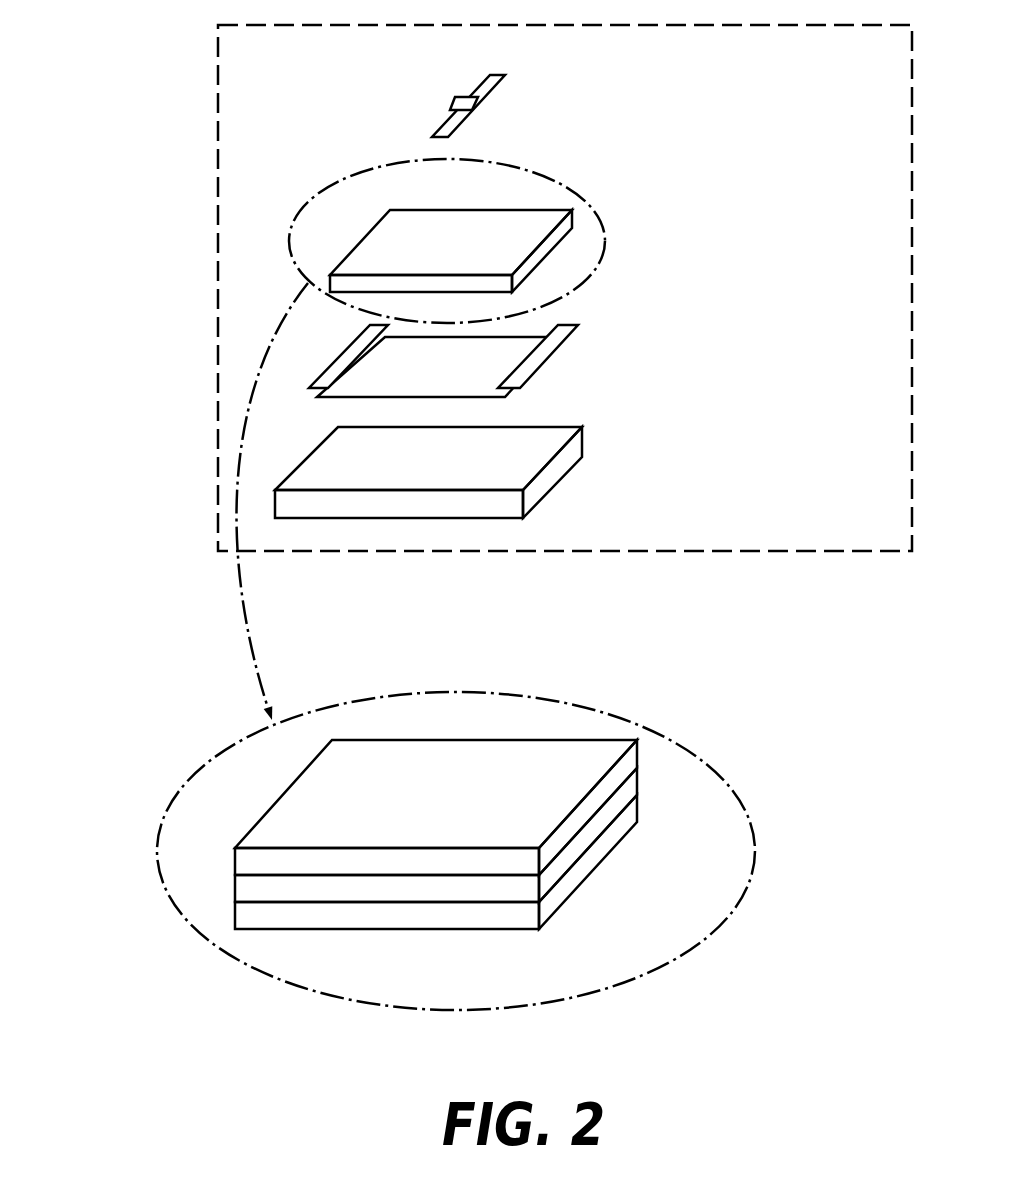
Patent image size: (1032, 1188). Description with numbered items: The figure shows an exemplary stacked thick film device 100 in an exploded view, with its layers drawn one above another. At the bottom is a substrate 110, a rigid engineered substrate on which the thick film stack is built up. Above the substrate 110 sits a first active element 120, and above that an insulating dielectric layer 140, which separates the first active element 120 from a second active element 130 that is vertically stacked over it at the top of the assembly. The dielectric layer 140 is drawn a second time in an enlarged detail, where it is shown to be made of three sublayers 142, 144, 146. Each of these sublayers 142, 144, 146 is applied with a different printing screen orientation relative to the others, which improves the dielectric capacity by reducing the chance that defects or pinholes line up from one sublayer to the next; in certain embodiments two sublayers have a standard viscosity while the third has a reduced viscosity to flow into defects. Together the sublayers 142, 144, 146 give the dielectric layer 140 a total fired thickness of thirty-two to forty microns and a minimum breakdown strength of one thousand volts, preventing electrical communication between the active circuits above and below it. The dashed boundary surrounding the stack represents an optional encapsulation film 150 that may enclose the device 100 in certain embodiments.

The stacked thick film device 100 is at (152, 266).
The substrate 110 is at (563, 466).
The first active element 120 is at (500, 362).
The second active element 130 is at (486, 103).
The insulating dielectric layer 140 is at (508, 244).
The dielectric sublayer 142 is at (631, 818).
The dielectric sublayer 144 is at (629, 793).
The dielectric sublayer 146 is at (629, 759).
The encapsulation film 150 is at (877, 551).